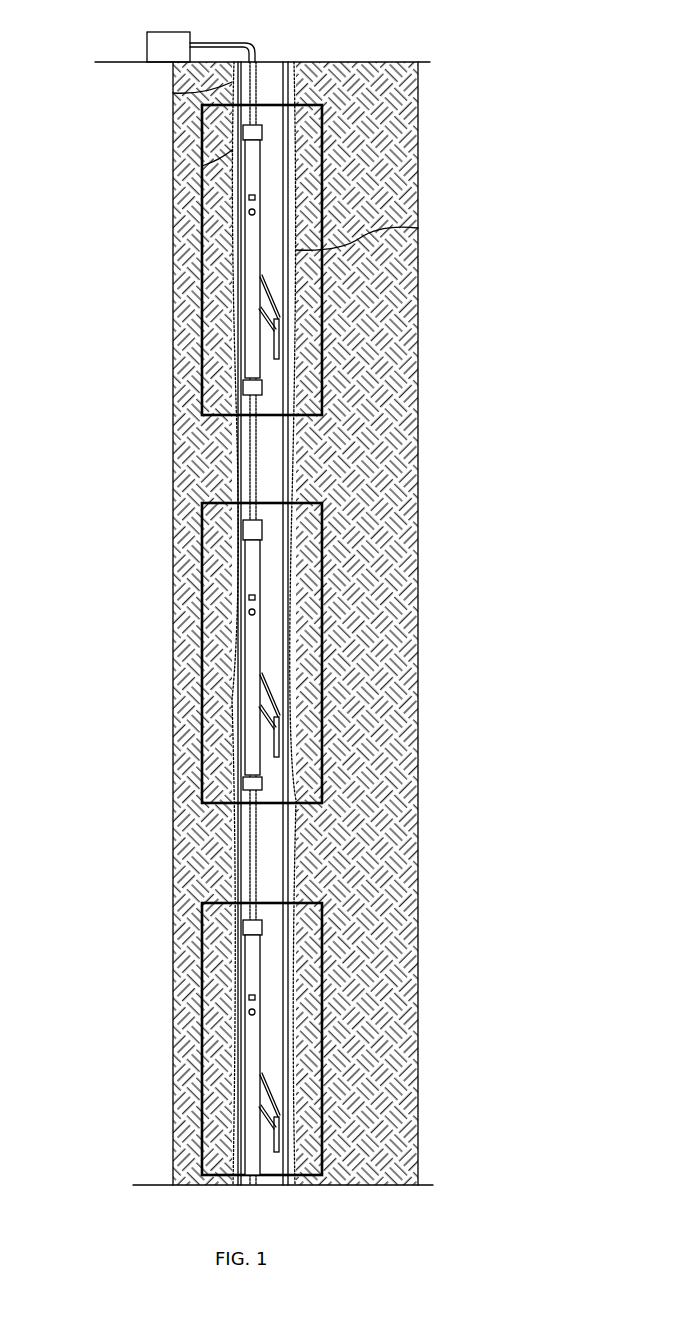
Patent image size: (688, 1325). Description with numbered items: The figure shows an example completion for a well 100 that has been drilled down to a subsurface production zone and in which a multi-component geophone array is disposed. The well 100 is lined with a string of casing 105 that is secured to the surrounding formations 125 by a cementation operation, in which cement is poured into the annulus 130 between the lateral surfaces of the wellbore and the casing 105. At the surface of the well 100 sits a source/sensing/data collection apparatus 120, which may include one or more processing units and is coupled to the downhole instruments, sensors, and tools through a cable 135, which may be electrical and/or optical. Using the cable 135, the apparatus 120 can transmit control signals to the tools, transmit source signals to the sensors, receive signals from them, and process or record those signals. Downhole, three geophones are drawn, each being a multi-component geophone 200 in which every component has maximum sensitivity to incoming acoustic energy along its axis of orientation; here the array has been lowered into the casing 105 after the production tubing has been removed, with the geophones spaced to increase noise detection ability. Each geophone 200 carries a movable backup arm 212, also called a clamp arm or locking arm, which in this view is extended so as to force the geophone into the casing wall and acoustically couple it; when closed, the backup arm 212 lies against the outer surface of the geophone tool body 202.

The well 100 is at (303, 52).
The source/sensing/data collection apparatus 120 is at (147, 48).
The formations 125 is at (380, 722).
The casing 105 is at (290, 430).
The annulus 130 is at (228, 875).
The cable 135 is at (240, 428).
The multi-component geophone 200 is at (172, 376).
The geophone tool body 202 is at (247, 140).
The backup arm 212 is at (262, 330).